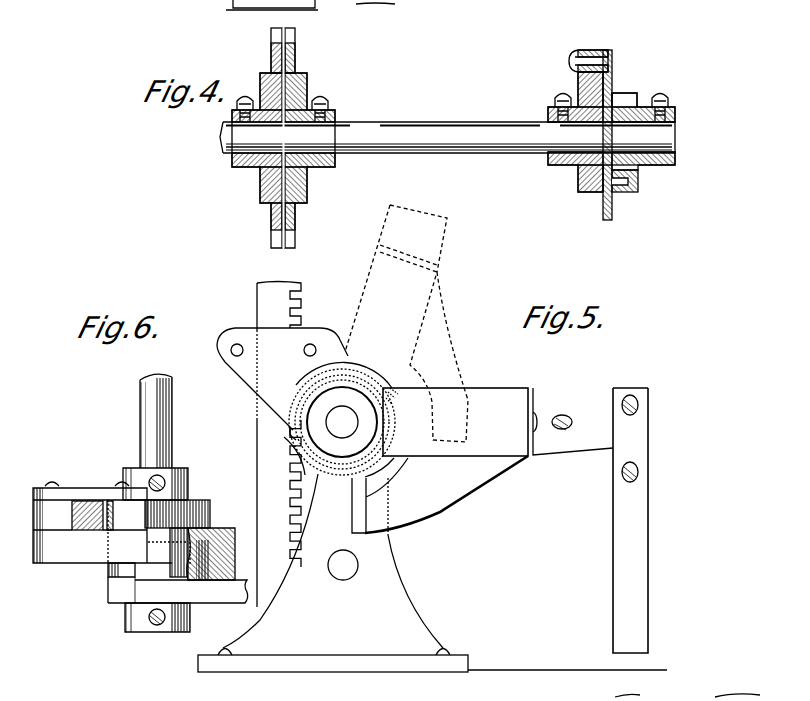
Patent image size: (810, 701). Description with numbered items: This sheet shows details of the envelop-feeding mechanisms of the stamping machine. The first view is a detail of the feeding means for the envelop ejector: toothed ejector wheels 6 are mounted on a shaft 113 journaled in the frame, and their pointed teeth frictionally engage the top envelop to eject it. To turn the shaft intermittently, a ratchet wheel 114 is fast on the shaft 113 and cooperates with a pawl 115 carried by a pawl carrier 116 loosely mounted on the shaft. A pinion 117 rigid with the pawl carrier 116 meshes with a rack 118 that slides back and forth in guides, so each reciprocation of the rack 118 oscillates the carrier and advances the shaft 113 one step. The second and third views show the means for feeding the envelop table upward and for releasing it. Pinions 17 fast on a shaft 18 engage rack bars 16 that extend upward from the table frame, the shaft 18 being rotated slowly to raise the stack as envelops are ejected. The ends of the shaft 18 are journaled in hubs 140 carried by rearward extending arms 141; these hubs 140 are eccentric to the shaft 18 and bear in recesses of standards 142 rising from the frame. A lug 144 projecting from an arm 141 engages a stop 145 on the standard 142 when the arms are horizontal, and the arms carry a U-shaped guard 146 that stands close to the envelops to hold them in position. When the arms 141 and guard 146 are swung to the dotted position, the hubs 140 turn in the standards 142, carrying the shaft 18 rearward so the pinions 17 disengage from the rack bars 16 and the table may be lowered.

In FIG. 4, the ejector wheels 6 is at (281, 232).
In FIG. 4, the shaft 113 is at (438, 102).
In FIG. 4, the ratchet wheel 114 is at (578, 80).
In FIG. 4, the pawl 115 is at (594, 50).
In FIG. 4, the pawl carrier 116 is at (612, 84).
In FIG. 4, the pinion 117 is at (638, 94).
In FIG. 4, the rack 118 is at (640, 191).
In FIG. 5, the rack bars 16 is at (272, 420).
In FIG. 6, the rack bars 16 is at (82, 500).
In FIG. 5, the pinions 17 is at (290, 447).
In FIG. 6, the pinions 17 is at (183, 508).
In FIG. 5, the shaft 18 is at (342, 422).
In FIG. 6, the shaft 18 is at (142, 416).
In FIG. 6, the hubs 140 is at (192, 578).
In FIG. 5, the arms 141 is at (510, 388).
In FIG. 6, the arms 141 is at (227, 598).
In FIG. 5, the standards 142 is at (385, 577).
In FIG. 6, the standards 142 is at (230, 528).
In FIG. 5, the lug 144 is at (462, 485).
In FIG. 5, the stop 145 is at (357, 534).
In FIG. 5, the U-shaped guard 146 is at (643, 577).